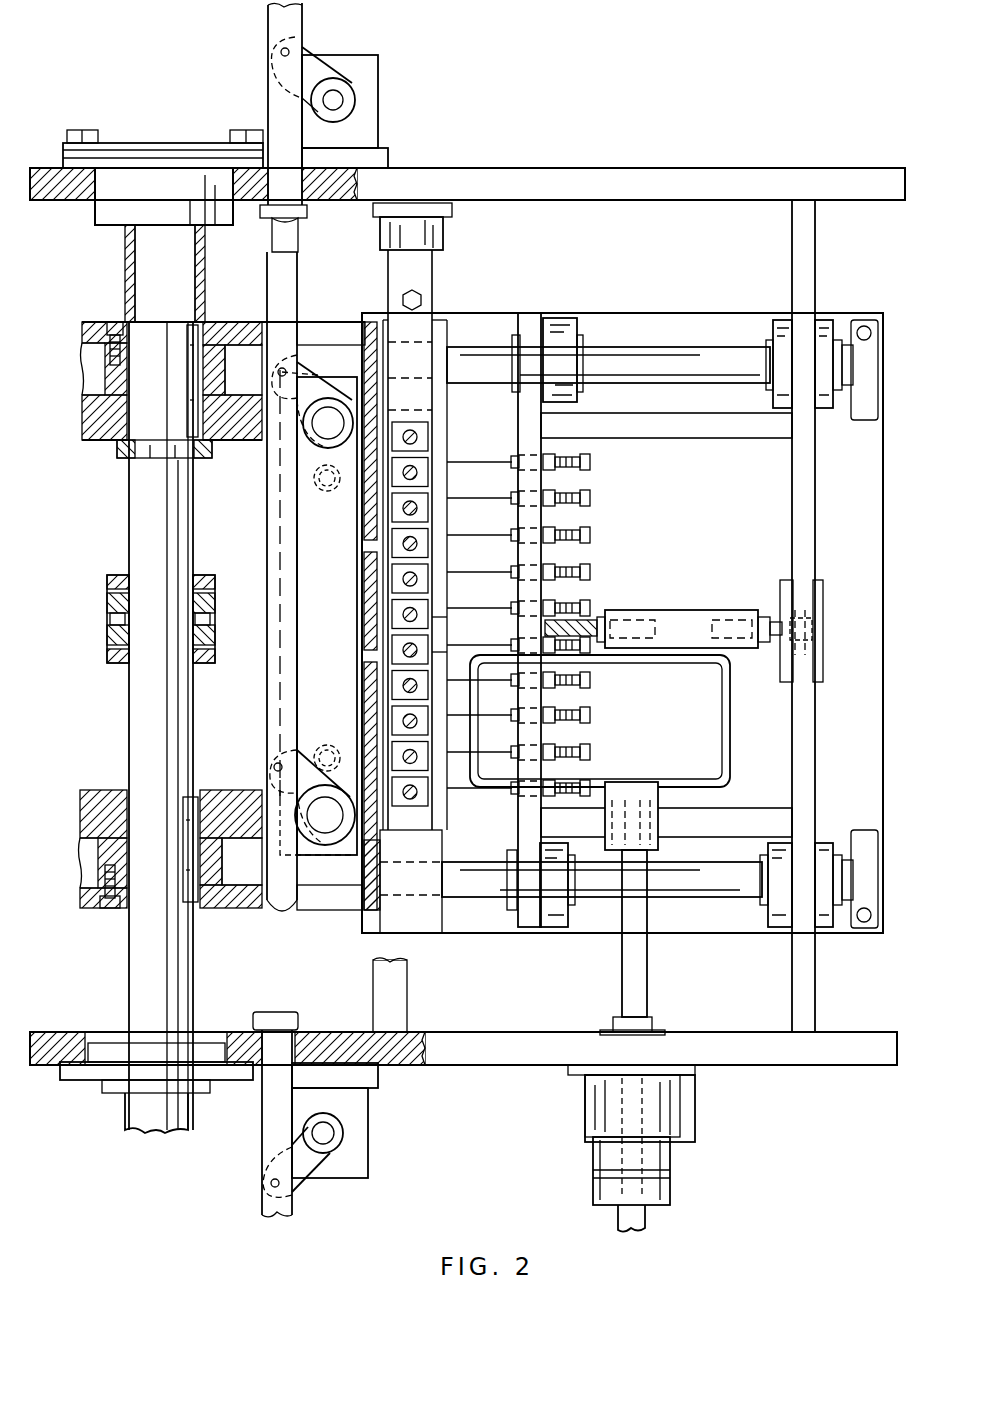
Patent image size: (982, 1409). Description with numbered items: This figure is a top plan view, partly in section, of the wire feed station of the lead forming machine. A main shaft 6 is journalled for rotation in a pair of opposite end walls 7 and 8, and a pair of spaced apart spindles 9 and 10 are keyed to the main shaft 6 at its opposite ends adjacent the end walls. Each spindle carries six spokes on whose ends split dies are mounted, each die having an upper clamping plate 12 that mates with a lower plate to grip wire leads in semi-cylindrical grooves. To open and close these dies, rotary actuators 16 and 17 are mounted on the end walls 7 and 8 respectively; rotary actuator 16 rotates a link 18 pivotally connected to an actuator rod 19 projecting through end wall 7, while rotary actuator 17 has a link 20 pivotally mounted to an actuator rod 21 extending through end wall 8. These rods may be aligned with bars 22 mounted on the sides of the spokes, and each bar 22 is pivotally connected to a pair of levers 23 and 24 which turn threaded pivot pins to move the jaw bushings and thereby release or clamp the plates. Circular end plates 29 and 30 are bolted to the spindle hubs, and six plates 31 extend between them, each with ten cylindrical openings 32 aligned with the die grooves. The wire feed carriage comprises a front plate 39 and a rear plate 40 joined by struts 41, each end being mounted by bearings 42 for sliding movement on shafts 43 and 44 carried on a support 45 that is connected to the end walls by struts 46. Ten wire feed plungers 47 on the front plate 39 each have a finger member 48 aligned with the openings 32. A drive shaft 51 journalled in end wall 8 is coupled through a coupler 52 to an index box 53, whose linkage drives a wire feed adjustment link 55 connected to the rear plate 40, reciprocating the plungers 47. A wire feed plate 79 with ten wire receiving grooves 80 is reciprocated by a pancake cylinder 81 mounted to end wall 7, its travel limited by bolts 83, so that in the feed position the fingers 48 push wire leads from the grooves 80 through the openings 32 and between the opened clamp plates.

The main shaft 6 is at (129, 718).
The end wall 7 is at (600, 170).
The end wall 8 is at (508, 1065).
The spindle 9 is at (95, 440).
The spindle 10 is at (90, 812).
The upper clamping plate 12 is at (315, 678).
The rotary actuator 16 is at (380, 90).
The rotary actuator 17 is at (368, 1137).
The link 18 is at (322, 48).
The actuator rod 19 is at (268, 86).
The link 20 is at (322, 1157).
The actuator rod 21 is at (262, 1158).
The bar 22 is at (267, 515).
The lever 23 is at (295, 368).
The lever 24 is at (302, 760).
The circular end plate 29 is at (112, 322).
The circular end plate 30 is at (100, 908).
The plate 31 is at (362, 868).
The cylindrical opening 32 is at (362, 546).
The front plate 39 is at (527, 928).
The rear plate 40 is at (815, 750).
The strut 41 is at (712, 438).
The bearing 42 is at (545, 318).
The shaft 43 is at (632, 347).
The shaft 44 is at (720, 898).
The support 45 is at (883, 490).
The strut 46 is at (815, 267).
The wire feed plunger 47 is at (592, 535).
The finger member 48 is at (493, 533).
The drive shaft 51 is at (648, 1222).
The coupler 52 is at (660, 800).
The index box 53 is at (731, 715).
The wire feed adjustment link 55 is at (675, 610).
The wire feed plate 79 is at (435, 330).
The wire receiving groove 80 is at (425, 560).
The pancake cylinder 81 is at (446, 232).
The bolt 83 is at (435, 650).